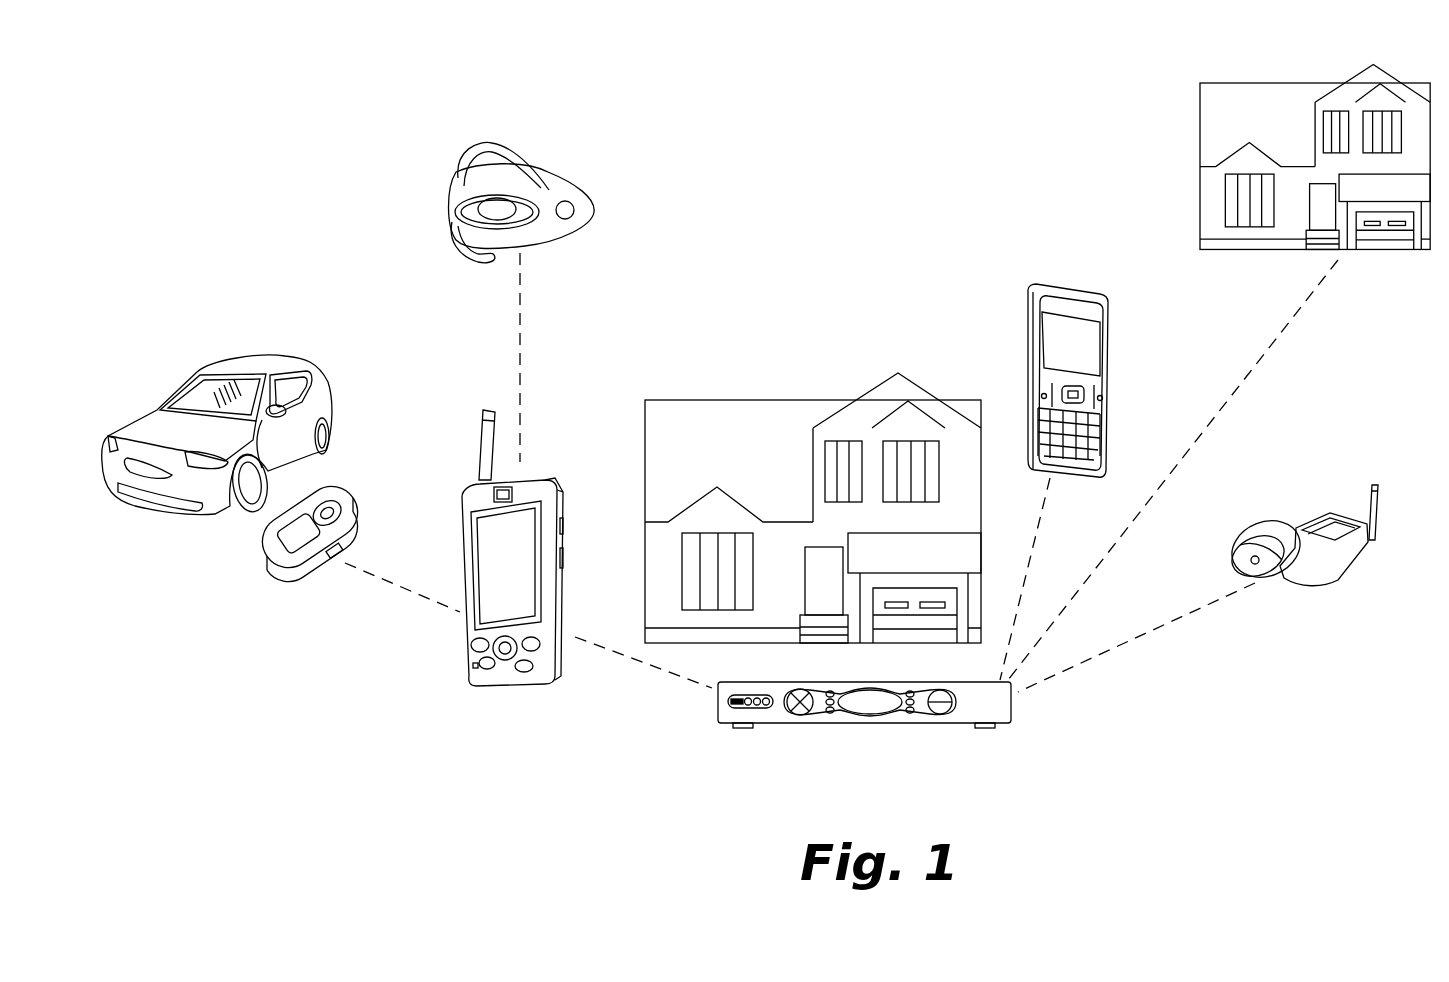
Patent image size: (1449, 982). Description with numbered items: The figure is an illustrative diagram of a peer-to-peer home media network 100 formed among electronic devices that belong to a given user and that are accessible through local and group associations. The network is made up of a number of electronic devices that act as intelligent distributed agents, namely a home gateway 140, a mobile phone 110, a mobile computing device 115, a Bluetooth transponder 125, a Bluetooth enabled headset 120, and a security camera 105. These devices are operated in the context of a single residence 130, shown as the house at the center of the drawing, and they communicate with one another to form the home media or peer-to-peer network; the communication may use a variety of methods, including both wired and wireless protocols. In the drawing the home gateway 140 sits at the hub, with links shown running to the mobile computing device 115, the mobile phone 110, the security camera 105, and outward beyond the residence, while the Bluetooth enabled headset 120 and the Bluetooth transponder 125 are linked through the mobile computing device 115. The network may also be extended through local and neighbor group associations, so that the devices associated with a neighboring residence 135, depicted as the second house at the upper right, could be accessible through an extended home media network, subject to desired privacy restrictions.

The communication system 100 is at (296, 150).
The security camera 105 is at (1302, 587).
The mobile phone 110 is at (1056, 285).
The mobile computing device 115 is at (522, 685).
The Bluetooth enabled headset 120 is at (481, 262).
The Bluetooth transponder 125 is at (268, 571).
The single residence 130 is at (722, 399).
The neighboring residence 135 is at (1200, 132).
The home gateway 140 is at (866, 724).